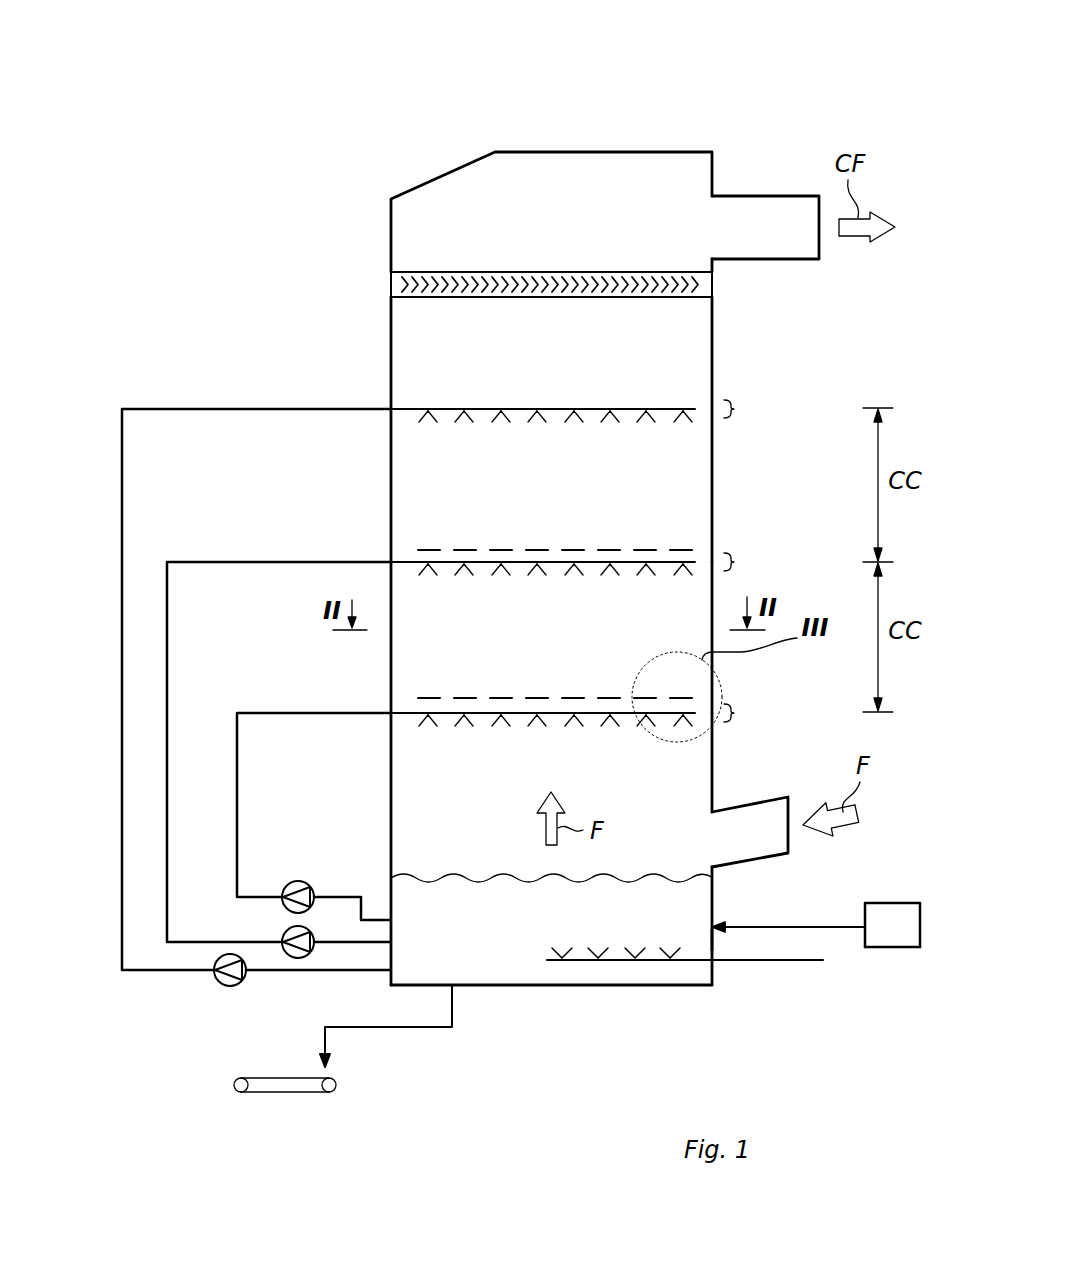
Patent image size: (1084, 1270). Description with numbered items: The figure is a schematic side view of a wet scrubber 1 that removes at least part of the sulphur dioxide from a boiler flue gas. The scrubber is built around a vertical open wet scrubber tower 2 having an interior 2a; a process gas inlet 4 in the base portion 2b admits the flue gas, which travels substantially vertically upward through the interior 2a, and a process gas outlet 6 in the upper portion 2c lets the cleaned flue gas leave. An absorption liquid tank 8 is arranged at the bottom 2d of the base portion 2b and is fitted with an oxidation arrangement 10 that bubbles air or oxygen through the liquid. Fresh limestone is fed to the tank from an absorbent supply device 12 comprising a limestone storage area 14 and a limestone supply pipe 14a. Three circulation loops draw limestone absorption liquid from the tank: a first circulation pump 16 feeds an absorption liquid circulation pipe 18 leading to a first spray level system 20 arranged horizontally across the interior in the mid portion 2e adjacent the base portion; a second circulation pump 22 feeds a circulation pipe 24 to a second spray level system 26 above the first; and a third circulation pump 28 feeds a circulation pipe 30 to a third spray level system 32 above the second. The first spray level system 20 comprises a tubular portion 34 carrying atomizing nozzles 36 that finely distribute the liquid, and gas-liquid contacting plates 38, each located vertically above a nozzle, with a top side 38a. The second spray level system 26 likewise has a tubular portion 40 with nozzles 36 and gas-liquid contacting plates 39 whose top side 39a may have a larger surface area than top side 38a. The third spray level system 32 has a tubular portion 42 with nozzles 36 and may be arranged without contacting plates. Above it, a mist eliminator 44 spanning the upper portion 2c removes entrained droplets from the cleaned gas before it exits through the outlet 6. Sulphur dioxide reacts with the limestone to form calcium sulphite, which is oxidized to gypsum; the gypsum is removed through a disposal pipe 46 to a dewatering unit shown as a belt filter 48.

The wet scrubber 1 is at (636, 54).
The wet scrubber tower 2 is at (712, 607).
The interior 2a is at (400, 470).
The base portion 2b is at (390, 812).
The upper portion 2c is at (390, 233).
The bottom 2d is at (545, 987).
The mid portion 2e is at (398, 588).
The process gas inlet 4 is at (772, 797).
The process gas outlet 6 is at (780, 195).
The absorption liquid tank 8 is at (712, 940).
The oxidation arrangement 10 is at (775, 963).
The absorbent supply device 12 is at (898, 891).
The limestone storage area 14 is at (893, 948).
The limestone supply pipe 14a is at (823, 926).
The first circulation pump 16 is at (303, 882).
The absorption liquid circulation pipe 18 is at (238, 770).
The first spray level system 20 is at (579, 717).
The second circulation pump 22 is at (282, 940).
The absorption liquid circulation pipe 24 is at (170, 697).
The second spray level system 26 is at (579, 556).
The third circulation pump 28 is at (215, 985).
The absorption liquid circulation pipe 30 is at (120, 682).
The third spray level system 32 is at (579, 428).
The tubular portion 34 is at (402, 717).
The atomizing nozzles 36 is at (592, 409).
The gas-liquid contacting plates 38 is at (610, 696).
The top side 38a is at (532, 696).
The gas-liquid contacting plates 39 is at (640, 548).
The top side 39a is at (608, 548).
The tubular portion 40 is at (518, 566).
The tubular portion 42 is at (485, 412).
The mist eliminator 44 is at (592, 272).
The disposal pipe 46 is at (418, 1030).
The belt filter 48 is at (292, 1094).